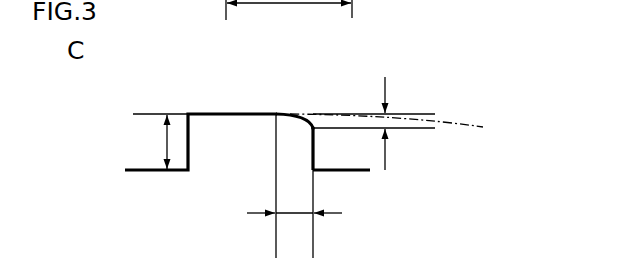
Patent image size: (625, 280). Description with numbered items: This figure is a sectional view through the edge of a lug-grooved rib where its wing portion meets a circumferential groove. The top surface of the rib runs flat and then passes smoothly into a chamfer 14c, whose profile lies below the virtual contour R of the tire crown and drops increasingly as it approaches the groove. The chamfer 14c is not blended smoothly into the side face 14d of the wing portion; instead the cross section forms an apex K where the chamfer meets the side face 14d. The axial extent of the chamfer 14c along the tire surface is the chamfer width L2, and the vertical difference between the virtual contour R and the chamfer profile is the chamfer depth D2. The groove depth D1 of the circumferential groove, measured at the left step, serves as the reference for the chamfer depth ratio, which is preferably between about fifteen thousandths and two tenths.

The chamfer 14c is at (294, 112).
The side face 14d is at (335, 165).
The apex K is at (315, 125).
The virtual contour of the tire crown R is at (386, 115).
The groove depth D1 is at (148, 142).
The chamfer depth D2 is at (374, 123).
The chamfer width L2 is at (294, 186).